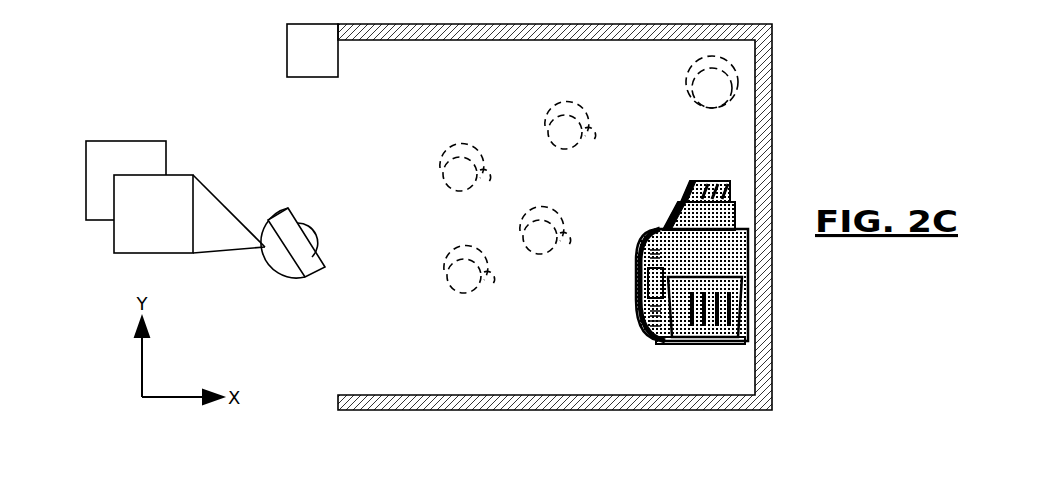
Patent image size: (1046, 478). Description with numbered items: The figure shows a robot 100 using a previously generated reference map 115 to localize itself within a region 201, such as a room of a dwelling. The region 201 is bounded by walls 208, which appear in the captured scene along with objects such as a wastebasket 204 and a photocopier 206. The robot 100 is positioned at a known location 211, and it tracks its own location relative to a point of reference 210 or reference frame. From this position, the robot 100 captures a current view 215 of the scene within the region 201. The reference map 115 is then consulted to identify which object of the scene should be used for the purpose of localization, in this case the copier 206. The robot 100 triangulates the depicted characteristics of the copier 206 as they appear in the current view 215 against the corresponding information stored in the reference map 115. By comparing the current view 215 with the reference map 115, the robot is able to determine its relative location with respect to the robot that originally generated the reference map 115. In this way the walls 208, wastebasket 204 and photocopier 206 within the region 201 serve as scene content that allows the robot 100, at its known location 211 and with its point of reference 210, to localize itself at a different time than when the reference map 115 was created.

The robot 100 is at (305, 258).
The reference map 115 is at (153, 207).
The region 201 is at (555, 217).
The wastebasket 204 is at (720, 96).
The photocopier 206 is at (635, 312).
The walls 208 is at (523, 403).
The point of reference 210 is at (300, 55).
The known location 211 is at (122, 237).
The current view 215 is at (95, 150).